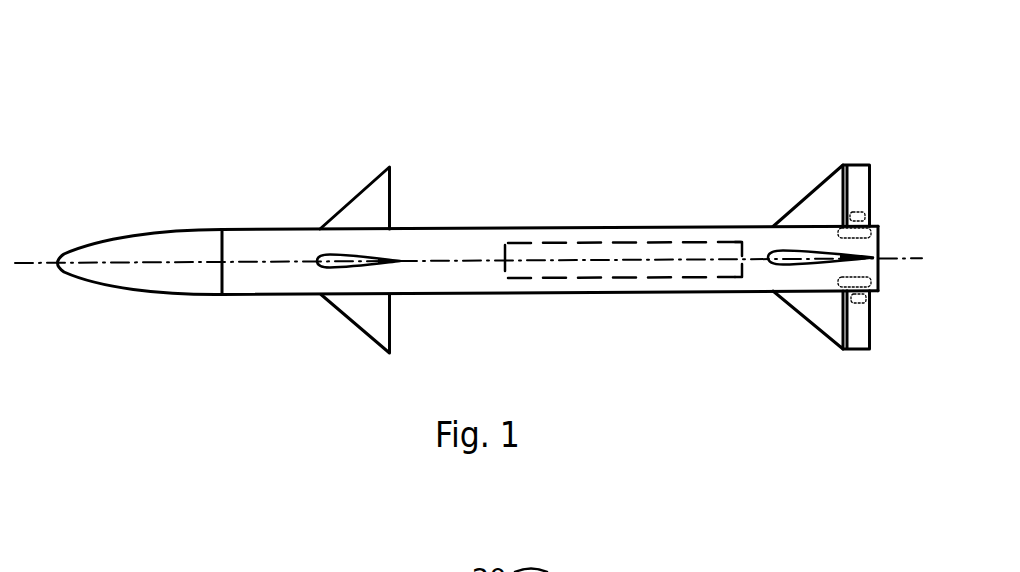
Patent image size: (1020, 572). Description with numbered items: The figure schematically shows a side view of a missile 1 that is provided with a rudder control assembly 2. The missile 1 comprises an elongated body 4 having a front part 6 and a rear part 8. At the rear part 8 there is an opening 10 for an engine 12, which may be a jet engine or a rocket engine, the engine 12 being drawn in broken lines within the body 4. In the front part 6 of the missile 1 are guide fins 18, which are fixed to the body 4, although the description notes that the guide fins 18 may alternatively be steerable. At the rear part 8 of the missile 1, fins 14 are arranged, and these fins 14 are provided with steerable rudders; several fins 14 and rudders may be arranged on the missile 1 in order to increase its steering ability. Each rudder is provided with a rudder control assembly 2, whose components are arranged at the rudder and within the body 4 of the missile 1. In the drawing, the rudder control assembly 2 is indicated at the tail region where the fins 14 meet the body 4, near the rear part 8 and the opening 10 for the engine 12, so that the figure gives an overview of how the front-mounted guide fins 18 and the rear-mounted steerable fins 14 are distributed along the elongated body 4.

The missile 1 is at (172, 112).
The rudder control assembly 2 is at (837, 112).
The elongated body 4 is at (463, 227).
The front part 6 is at (263, 229).
The rear part 8 is at (872, 172).
The opening 10 is at (880, 272).
The engine 12 is at (570, 243).
The fins 14 is at (800, 193).
The guide fins 18 is at (368, 190).